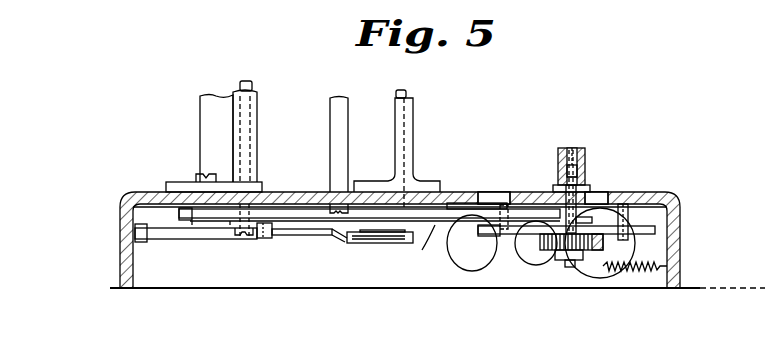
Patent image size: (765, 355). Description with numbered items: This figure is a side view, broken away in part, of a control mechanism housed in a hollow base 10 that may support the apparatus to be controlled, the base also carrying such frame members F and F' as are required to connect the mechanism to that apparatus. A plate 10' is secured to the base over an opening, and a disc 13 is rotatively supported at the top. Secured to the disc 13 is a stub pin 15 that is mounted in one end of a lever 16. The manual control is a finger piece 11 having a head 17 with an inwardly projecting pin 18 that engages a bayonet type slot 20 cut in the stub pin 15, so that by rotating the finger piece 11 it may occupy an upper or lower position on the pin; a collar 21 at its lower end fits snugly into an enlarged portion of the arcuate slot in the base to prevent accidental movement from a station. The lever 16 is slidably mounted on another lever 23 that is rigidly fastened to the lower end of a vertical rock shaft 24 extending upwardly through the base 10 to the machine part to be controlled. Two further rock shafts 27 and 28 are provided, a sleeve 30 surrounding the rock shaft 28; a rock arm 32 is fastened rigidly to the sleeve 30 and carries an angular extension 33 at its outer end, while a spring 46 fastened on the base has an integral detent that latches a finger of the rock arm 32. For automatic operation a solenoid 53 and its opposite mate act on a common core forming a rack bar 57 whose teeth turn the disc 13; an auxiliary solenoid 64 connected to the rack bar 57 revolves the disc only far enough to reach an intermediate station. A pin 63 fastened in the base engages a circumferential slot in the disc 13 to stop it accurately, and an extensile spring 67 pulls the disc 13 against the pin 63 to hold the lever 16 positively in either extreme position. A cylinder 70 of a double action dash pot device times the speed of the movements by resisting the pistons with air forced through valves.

The hollow base 10 is at (417, 240).
The plate 10' is at (485, 180).
The finger piece 11 is at (590, 169).
The disc 13 is at (488, 236).
The stub pin 15 is at (560, 164).
The lever 16 is at (418, 248).
The head 17 is at (578, 148).
The pin 18 is at (612, 191).
The bayonet type slot 20 is at (560, 174).
The collar 21 is at (556, 184).
The lever 23 is at (286, 212).
The rock shaft 24 is at (330, 141).
The rock shaft 27 is at (407, 95).
The rock shaft 28 is at (252, 86).
The sleeve 30 is at (257, 93).
The rock arm 32 is at (296, 236).
The angular extension 33 is at (344, 240).
The spring 46 is at (200, 235).
The solenoid 53 is at (629, 247).
The rack bar 57 is at (590, 256).
The pin 63 is at (625, 214).
The auxiliary solenoid 64 is at (540, 265).
The extensile spring 67 is at (636, 272).
The cylinder 70 is at (466, 271).
The frame member F is at (214, 144).
The frame member F' is at (401, 154).